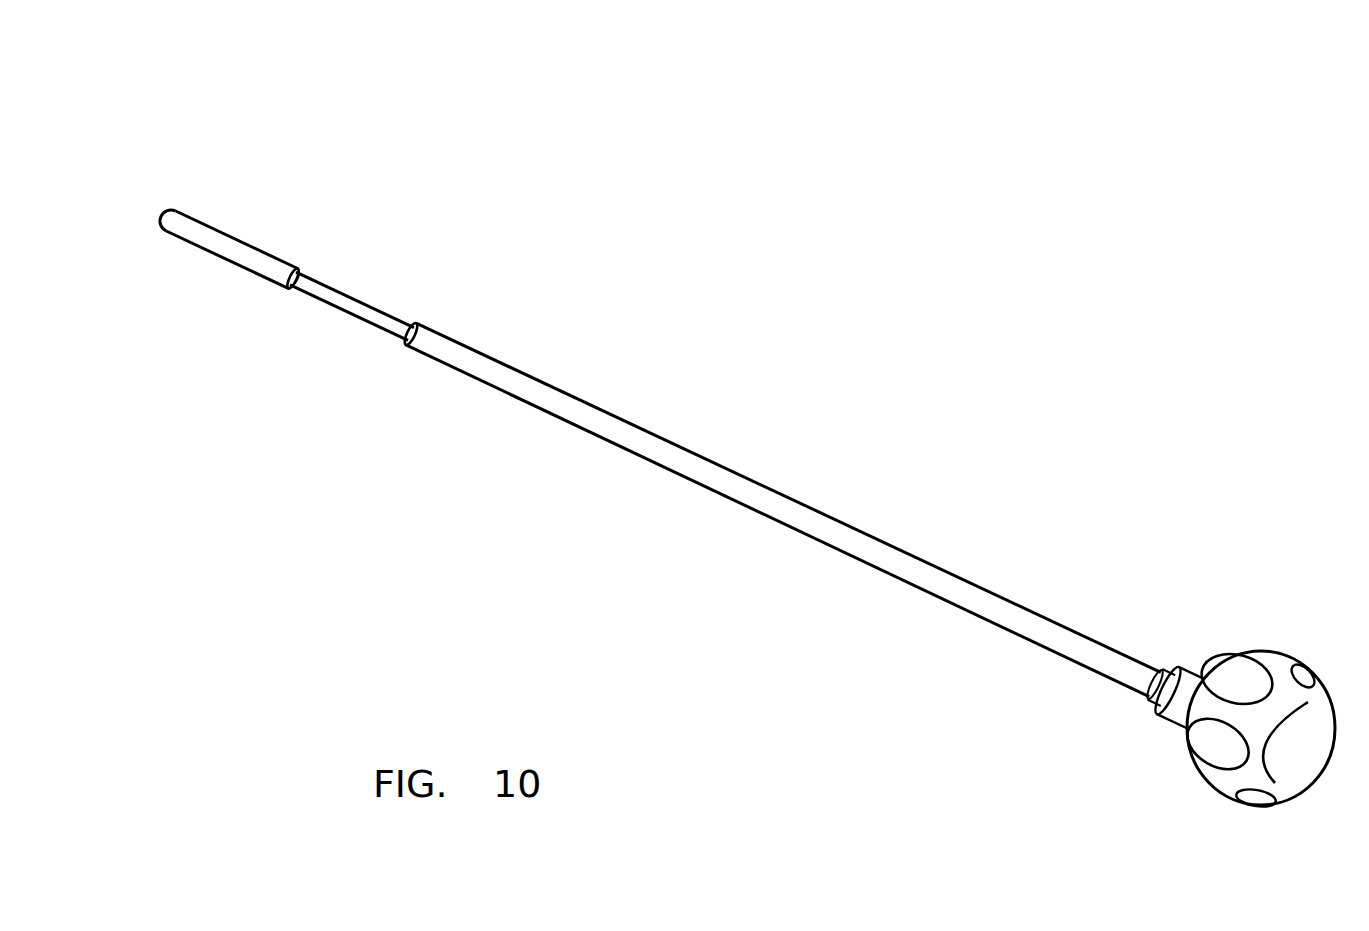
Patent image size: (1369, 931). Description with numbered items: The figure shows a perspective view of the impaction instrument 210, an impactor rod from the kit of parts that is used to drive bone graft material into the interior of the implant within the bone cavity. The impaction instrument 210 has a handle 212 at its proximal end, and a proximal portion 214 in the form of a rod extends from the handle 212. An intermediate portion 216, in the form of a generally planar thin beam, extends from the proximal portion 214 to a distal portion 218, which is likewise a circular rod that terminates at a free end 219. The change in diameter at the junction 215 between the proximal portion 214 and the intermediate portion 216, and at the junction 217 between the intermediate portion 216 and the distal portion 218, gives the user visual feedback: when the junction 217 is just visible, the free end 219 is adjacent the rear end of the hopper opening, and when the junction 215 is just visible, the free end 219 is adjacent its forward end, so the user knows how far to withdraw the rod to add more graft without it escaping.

The impaction instrument 210 is at (671, 409).
The handle 212 is at (1280, 638).
The proximal portion 214 is at (912, 553).
The junction 215 is at (428, 316).
The intermediate portion 216 is at (360, 297).
The junction 217 is at (300, 246).
The distal portion 218 is at (233, 238).
The free end 219 is at (168, 243).